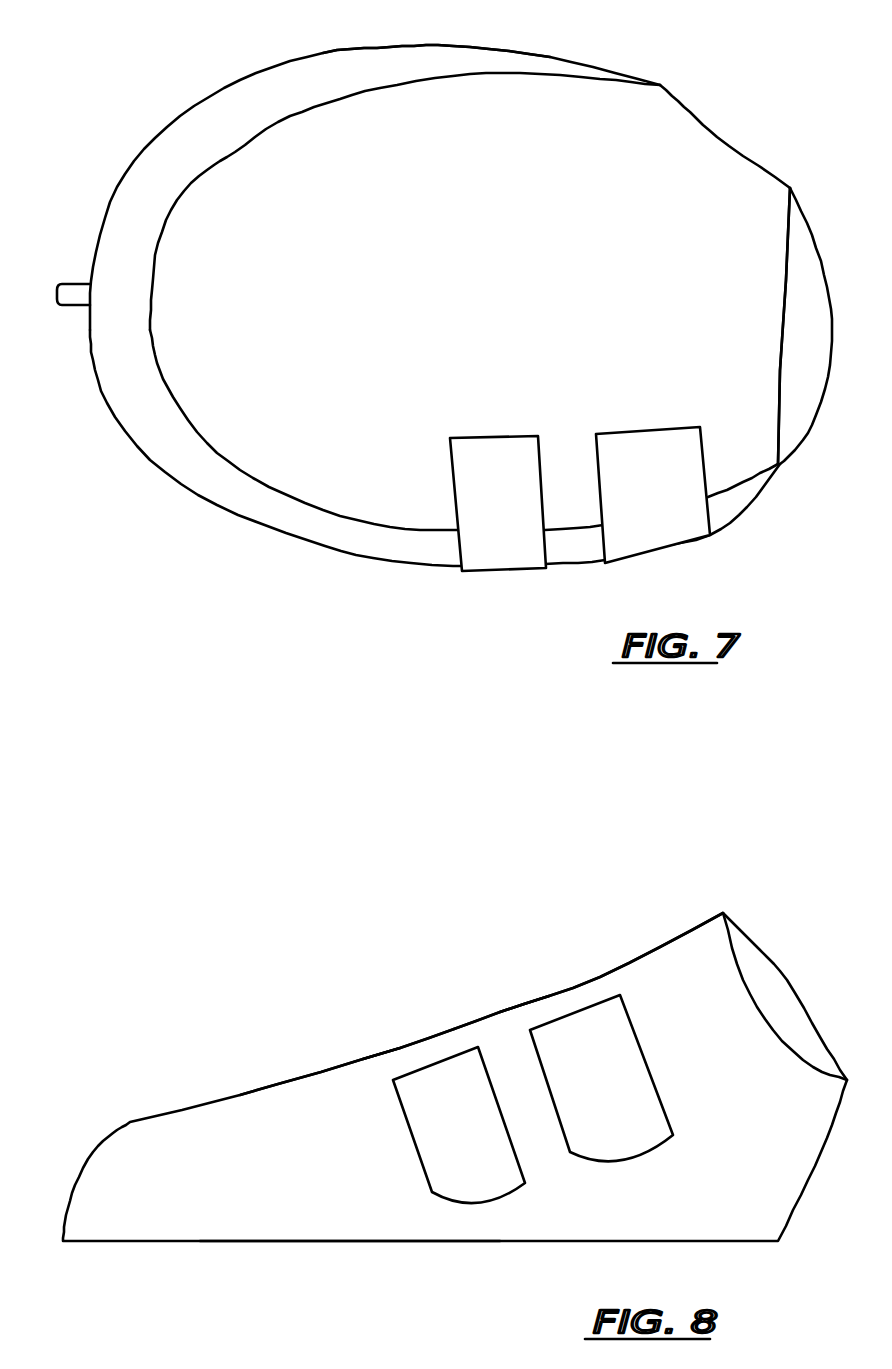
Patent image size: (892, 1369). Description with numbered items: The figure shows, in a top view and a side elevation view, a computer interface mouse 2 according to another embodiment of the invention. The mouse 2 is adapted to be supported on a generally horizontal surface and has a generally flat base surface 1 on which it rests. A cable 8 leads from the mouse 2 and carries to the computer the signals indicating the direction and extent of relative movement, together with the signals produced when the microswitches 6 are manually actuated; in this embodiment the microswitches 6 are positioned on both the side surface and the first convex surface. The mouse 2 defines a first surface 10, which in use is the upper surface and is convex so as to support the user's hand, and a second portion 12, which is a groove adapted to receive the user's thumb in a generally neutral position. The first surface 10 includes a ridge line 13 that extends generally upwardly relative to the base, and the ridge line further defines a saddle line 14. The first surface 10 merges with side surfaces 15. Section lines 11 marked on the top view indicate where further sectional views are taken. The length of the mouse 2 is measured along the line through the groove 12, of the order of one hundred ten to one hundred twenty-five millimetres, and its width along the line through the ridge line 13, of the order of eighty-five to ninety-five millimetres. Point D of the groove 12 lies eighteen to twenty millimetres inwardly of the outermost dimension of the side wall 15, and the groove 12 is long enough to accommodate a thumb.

In FIG. 8, the base surface 1 is at (517, 1243).
In FIG. 7, the mouse 2 is at (277, 143).
In FIG. 8, the mouse 2 is at (671, 963).
In FIG. 7, the microswitches 6 is at (522, 557).
In FIG. 8, the microswitches 6 is at (533, 1099).
In FIG. 7, the cable 8 is at (72, 293).
In FIG. 8, the first surface 10 is at (333, 1066).
In FIG. 7, the section line 11 is at (683, 160).
In FIG. 7, the second portion 12 is at (150, 323).
In FIG. 7, the ridge line 13 is at (643, 107).
In FIG. 8, the ridge line 13 is at (502, 1012).
In FIG. 7, the saddle line 14 is at (237, 160).
In FIG. 8, the saddle line 14 is at (388, 1050).
In FIG. 7, the side surfaces 15 is at (400, 43).
In FIG. 8, the side surfaces 15 is at (307, 1217).
In FIG. 7, the point D is at (797, 185).